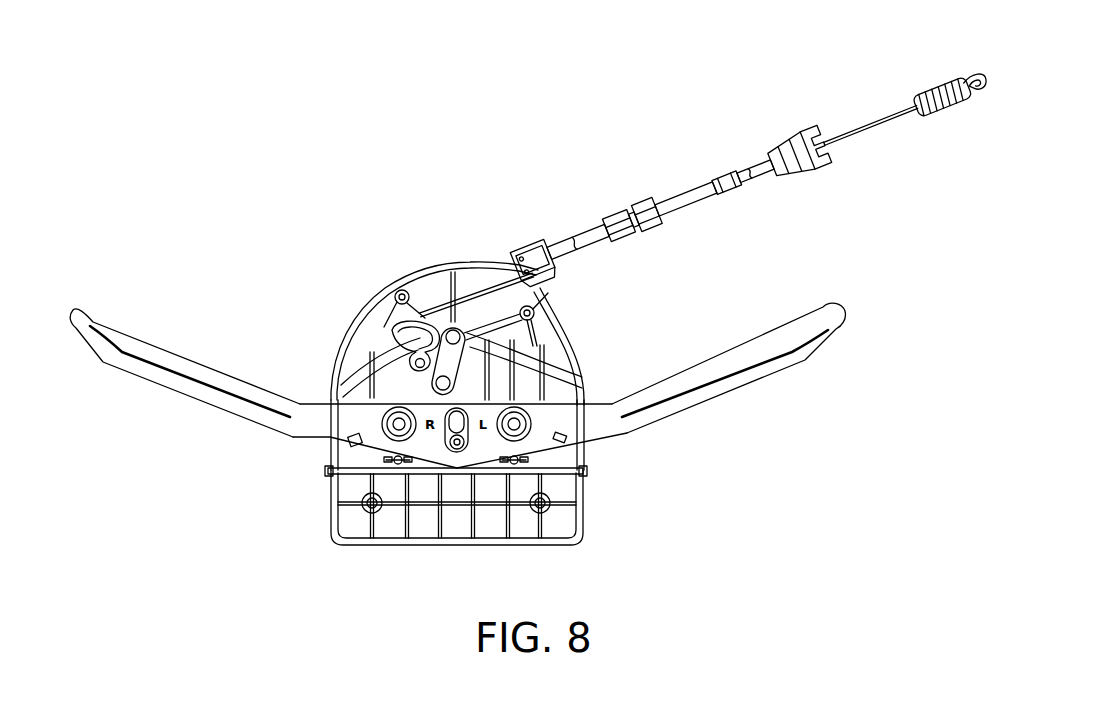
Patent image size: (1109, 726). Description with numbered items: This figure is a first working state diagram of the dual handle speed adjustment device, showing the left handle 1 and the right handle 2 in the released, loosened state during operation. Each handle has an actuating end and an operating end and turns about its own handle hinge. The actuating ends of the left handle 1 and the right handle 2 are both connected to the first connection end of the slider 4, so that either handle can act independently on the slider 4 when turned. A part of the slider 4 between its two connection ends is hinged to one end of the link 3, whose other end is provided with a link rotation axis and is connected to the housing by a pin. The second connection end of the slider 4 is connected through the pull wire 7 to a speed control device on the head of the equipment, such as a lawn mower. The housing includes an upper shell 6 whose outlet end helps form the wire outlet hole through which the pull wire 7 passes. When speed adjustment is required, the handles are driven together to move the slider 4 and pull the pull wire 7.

The left handle 1 is at (707, 380).
The right handle 2 is at (203, 377).
The link 3 is at (452, 358).
The slider 4 is at (417, 342).
The upper shell 6 is at (433, 500).
The pull wire 7 is at (722, 190).